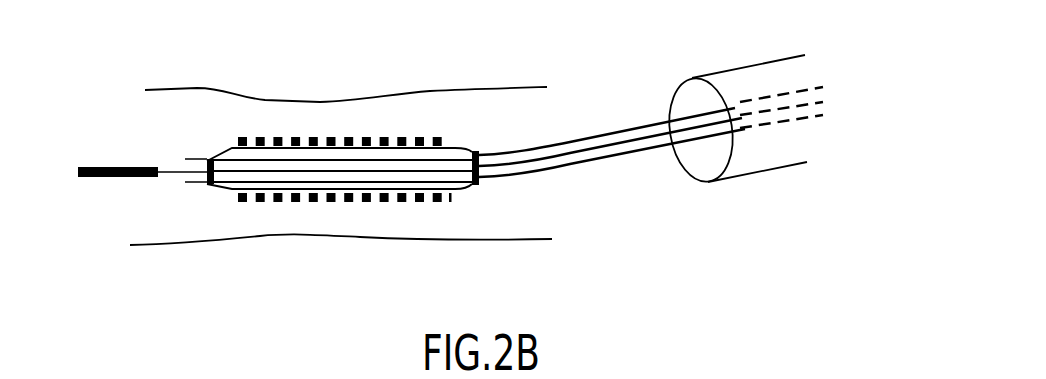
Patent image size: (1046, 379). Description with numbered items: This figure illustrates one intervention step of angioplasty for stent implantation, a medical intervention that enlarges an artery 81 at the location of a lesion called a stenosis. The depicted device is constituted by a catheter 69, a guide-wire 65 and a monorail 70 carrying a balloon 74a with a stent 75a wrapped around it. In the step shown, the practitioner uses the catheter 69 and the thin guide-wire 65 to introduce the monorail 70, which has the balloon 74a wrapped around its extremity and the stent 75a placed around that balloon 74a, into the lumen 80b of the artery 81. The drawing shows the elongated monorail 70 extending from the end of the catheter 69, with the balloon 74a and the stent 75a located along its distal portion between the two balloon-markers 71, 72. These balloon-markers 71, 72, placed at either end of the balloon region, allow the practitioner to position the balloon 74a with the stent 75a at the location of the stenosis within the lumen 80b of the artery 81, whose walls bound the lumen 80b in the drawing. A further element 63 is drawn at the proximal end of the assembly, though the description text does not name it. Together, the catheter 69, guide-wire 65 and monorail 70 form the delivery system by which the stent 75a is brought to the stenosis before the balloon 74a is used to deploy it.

The connector 63 is at (105, 177).
The guide-wire 65 is at (662, 138).
The catheter 69 is at (785, 167).
The monorail 70 is at (632, 157).
The balloon-marker 71 is at (202, 192).
The balloon-marker 72 is at (483, 190).
The balloon 74a is at (437, 202).
The stent 75a is at (400, 137).
The lumen 80b is at (306, 97).
The artery 81 is at (175, 256).